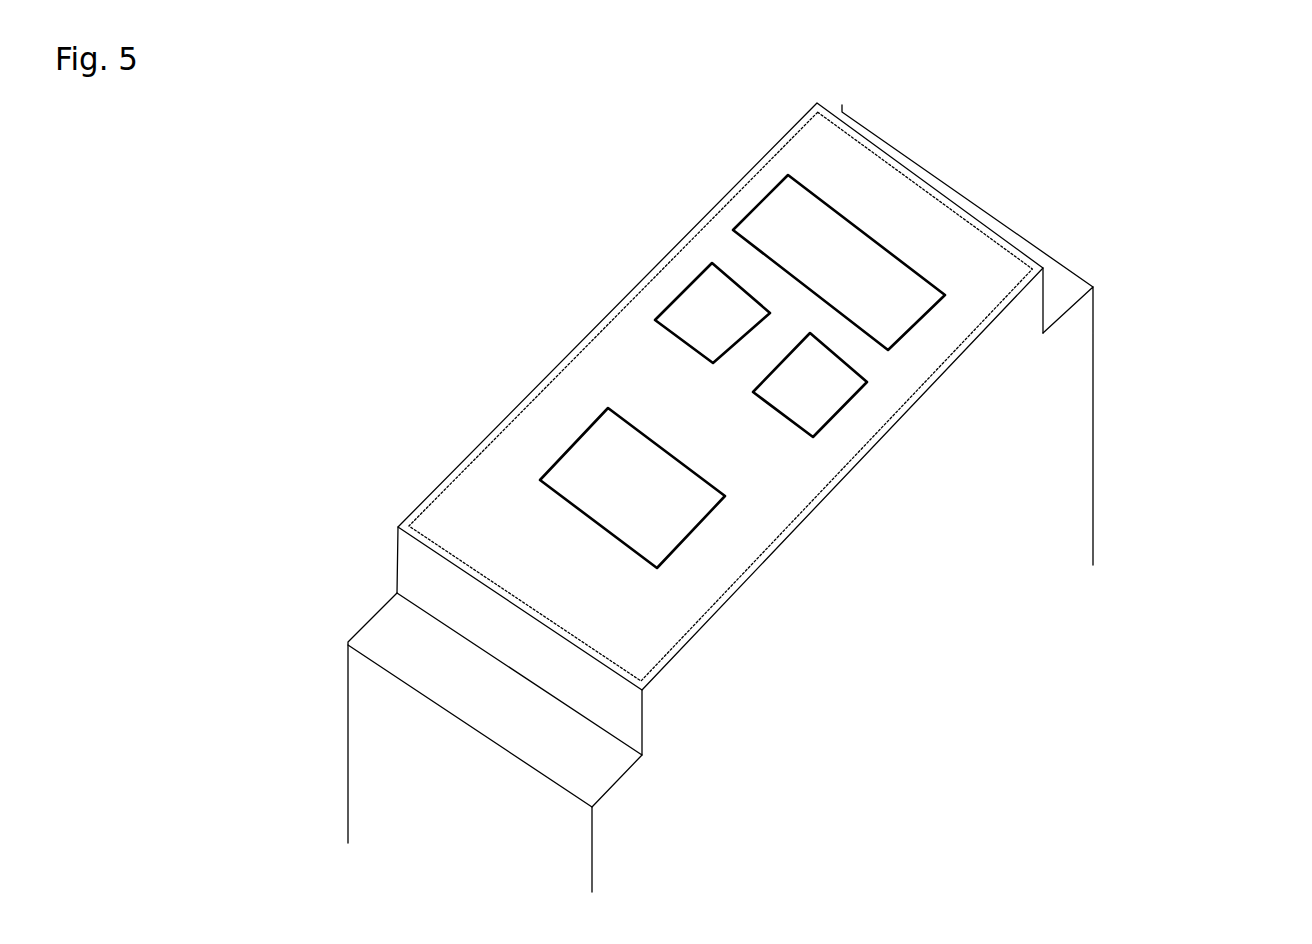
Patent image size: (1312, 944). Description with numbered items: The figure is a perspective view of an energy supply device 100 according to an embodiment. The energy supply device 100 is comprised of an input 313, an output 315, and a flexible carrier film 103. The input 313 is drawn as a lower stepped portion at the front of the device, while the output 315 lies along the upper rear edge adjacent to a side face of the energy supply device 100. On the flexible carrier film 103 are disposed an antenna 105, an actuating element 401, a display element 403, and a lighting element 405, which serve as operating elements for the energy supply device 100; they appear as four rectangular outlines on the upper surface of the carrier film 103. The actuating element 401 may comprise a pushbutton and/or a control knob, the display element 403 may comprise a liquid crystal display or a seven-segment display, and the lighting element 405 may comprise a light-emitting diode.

The energy supply device 100 is at (1072, 435).
The flexible carrier film 103 is at (478, 503).
The antenna 105 is at (583, 477).
The input 313 is at (608, 773).
The output 315 is at (1065, 293).
The actuating element 401 is at (702, 312).
The display element 403 is at (793, 215).
The lighting element 405 is at (832, 395).